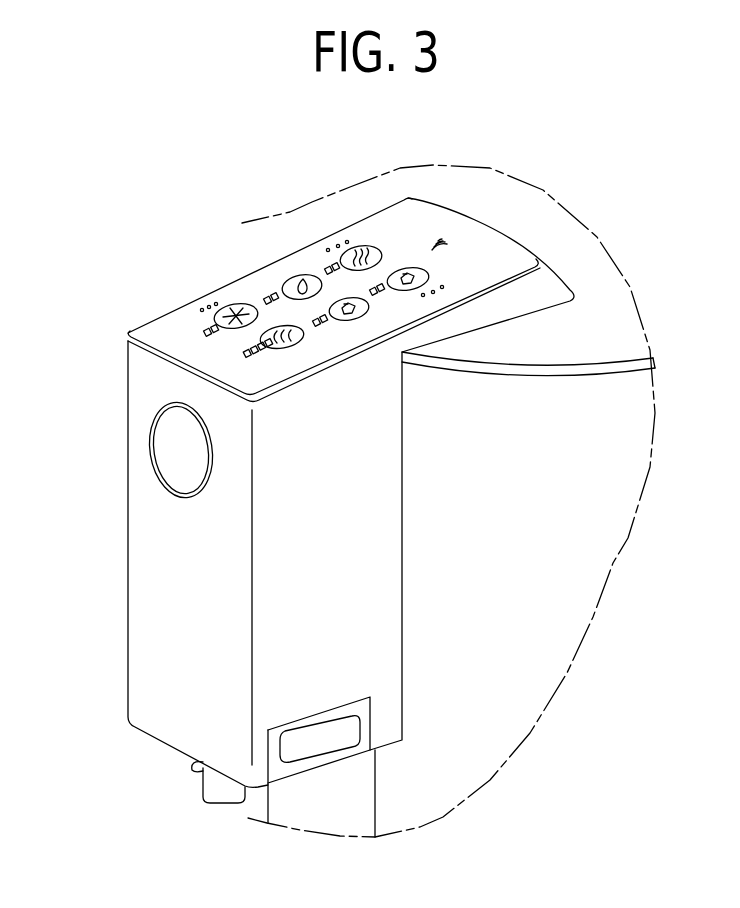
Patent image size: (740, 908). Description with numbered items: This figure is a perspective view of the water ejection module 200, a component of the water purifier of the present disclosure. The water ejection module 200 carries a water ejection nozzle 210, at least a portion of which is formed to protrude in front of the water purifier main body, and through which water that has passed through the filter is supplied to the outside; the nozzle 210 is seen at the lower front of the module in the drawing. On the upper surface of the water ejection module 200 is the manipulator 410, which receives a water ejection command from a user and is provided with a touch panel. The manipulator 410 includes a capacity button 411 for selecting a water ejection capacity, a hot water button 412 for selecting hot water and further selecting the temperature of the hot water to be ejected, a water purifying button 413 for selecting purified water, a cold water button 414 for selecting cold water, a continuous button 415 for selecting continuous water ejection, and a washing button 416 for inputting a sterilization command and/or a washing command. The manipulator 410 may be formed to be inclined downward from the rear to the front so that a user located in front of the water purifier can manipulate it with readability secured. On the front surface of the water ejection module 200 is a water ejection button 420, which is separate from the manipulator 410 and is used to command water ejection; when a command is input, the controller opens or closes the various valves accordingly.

The water ejection module 200 is at (145, 380).
The water ejection nozzle 210 is at (215, 792).
The manipulator 410 is at (173, 323).
The capacity button 411 is at (409, 268).
The hot water button 412 is at (359, 247).
The water purifying button 413 is at (296, 276).
The cold water button 414 is at (217, 304).
The continuous button 415 is at (349, 321).
The washing button 416 is at (279, 348).
The water ejection button 420 is at (162, 447).